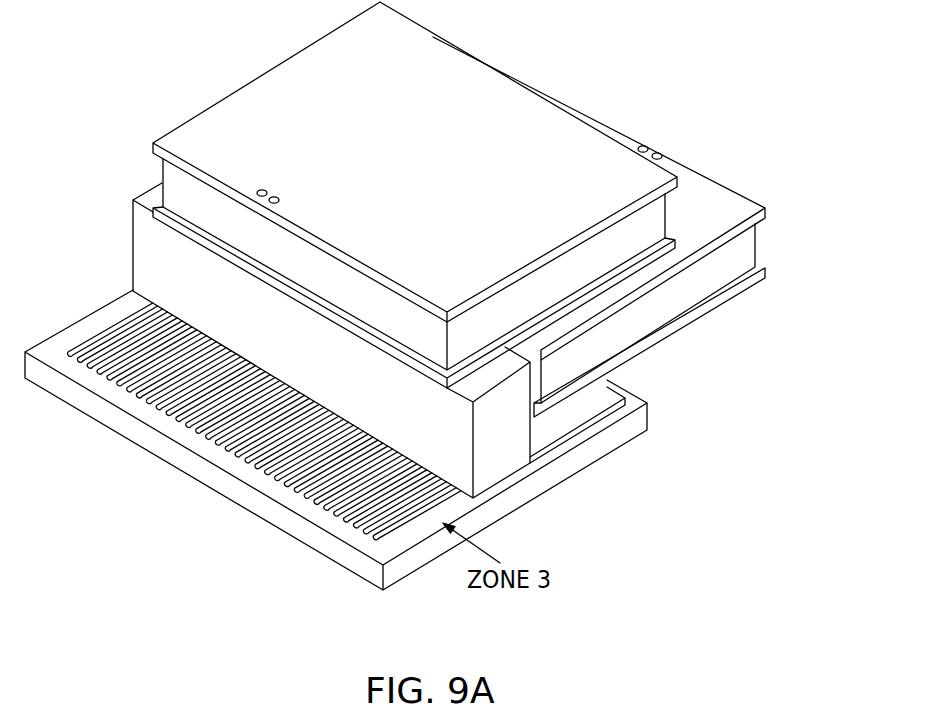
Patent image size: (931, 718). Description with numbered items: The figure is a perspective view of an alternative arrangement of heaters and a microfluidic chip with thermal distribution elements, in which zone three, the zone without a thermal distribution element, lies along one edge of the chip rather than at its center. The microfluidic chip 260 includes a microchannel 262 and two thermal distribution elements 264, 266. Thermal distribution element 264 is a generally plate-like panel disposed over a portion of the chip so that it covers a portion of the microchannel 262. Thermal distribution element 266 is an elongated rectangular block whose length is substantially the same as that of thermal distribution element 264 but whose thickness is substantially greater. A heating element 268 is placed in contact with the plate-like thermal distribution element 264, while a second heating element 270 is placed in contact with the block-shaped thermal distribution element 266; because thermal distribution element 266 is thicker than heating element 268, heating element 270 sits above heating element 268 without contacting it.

The microfluidic chip 260 is at (193, 467).
The microchannel 262 is at (102, 328).
The thermal distribution element 264 is at (613, 387).
The thermal distribution element 266 is at (145, 235).
The heating element 268 is at (745, 258).
The heating element 270 is at (210, 125).